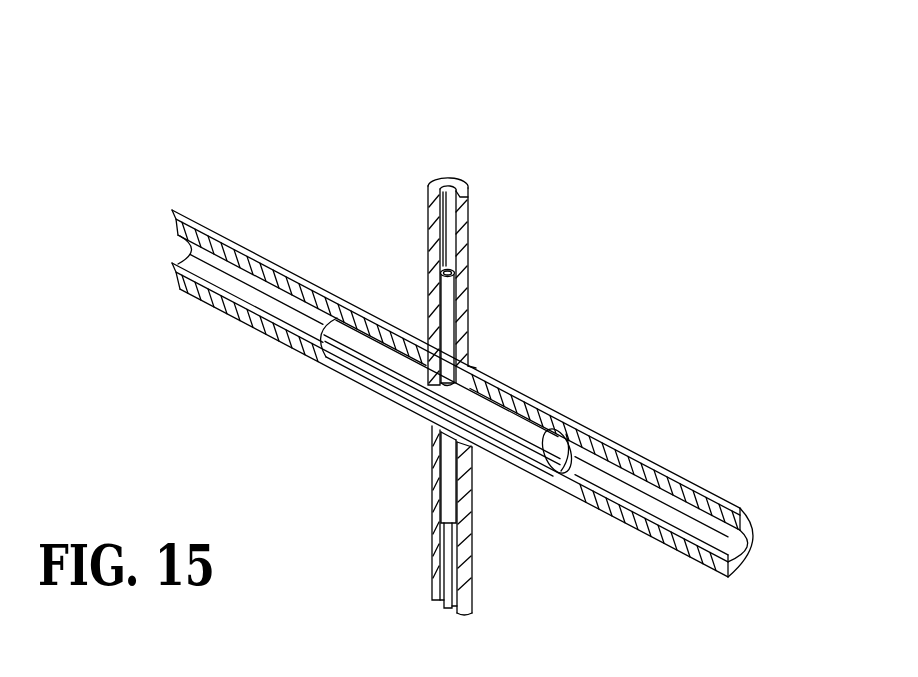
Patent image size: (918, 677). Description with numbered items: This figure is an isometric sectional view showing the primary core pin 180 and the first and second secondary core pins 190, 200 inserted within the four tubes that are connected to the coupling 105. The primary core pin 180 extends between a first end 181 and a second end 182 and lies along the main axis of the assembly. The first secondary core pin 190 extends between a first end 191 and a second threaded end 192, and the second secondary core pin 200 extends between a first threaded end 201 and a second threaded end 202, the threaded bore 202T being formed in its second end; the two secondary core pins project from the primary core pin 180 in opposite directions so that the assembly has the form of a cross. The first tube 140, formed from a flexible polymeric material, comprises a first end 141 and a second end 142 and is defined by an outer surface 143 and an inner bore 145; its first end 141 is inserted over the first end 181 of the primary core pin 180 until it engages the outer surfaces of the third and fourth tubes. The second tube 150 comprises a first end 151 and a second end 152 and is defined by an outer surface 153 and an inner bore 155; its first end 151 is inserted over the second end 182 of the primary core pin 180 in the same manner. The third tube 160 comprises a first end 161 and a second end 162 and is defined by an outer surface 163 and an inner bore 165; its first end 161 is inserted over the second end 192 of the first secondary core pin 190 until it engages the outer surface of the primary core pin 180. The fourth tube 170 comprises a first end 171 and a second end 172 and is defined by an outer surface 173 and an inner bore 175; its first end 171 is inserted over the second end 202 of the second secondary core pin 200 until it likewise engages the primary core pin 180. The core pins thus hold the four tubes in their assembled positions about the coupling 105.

The coupling 105 is at (289, 140).
The first tube 140 is at (263, 323).
The first end 141 is at (405, 330).
The second end 142 is at (190, 284).
The outer surface 143 is at (233, 232).
The inner bore 145 is at (188, 248).
The second tube 150 is at (658, 543).
The first end 151 is at (490, 382).
The second end 152 is at (717, 572).
The outer surface 153 is at (722, 505).
The inner bore 155 is at (747, 545).
The third tube 160 is at (432, 578).
The first end 161 is at (471, 442).
The second end 162 is at (475, 606).
The outer surface 163 is at (476, 565).
The inner bore 165 is at (452, 602).
The fourth tube 170 is at (470, 222).
The first end 171 is at (468, 352).
The second end 172 is at (464, 192).
The outer surface 173 is at (430, 188).
The inner bore 175 is at (447, 186).
The primary core pin 180 is at (405, 392).
The first end 181 is at (324, 362).
The second end 182 is at (553, 430).
The first secondary core pin 190 is at (440, 470).
The first end 191 is at (434, 437).
The second threaded end 192 is at (443, 535).
The second secondary core pin 200 is at (450, 303).
The first threaded end 201 is at (478, 370).
The second threaded end 202 is at (453, 278).
The threaded bore 202T is at (440, 267).